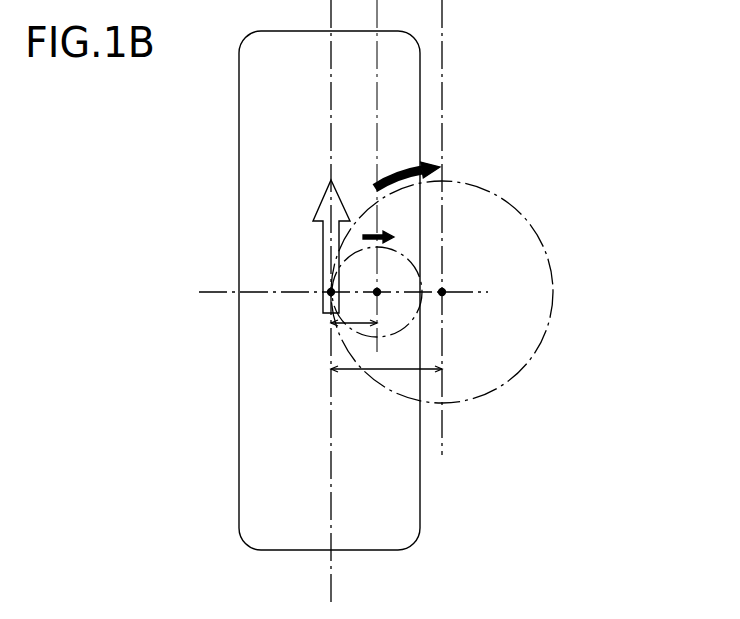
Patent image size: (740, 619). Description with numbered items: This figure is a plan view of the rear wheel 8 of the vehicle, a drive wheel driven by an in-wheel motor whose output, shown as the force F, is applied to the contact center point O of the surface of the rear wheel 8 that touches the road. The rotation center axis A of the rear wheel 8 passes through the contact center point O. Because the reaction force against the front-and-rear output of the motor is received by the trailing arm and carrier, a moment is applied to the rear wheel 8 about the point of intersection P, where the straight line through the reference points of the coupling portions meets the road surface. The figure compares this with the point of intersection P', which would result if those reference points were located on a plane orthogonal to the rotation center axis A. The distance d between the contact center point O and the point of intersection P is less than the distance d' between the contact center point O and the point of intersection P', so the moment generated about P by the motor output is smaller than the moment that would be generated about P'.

The rear wheel 8 is at (265, 382).
The rotation center axis A is at (331, 289).
The contact center point O is at (319, 281).
The point of intersection P is at (377, 284).
The point of intersection P' is at (442, 282).
The driving force F is at (321, 246).
The distance d is at (354, 312).
The distance d' is at (386, 357).